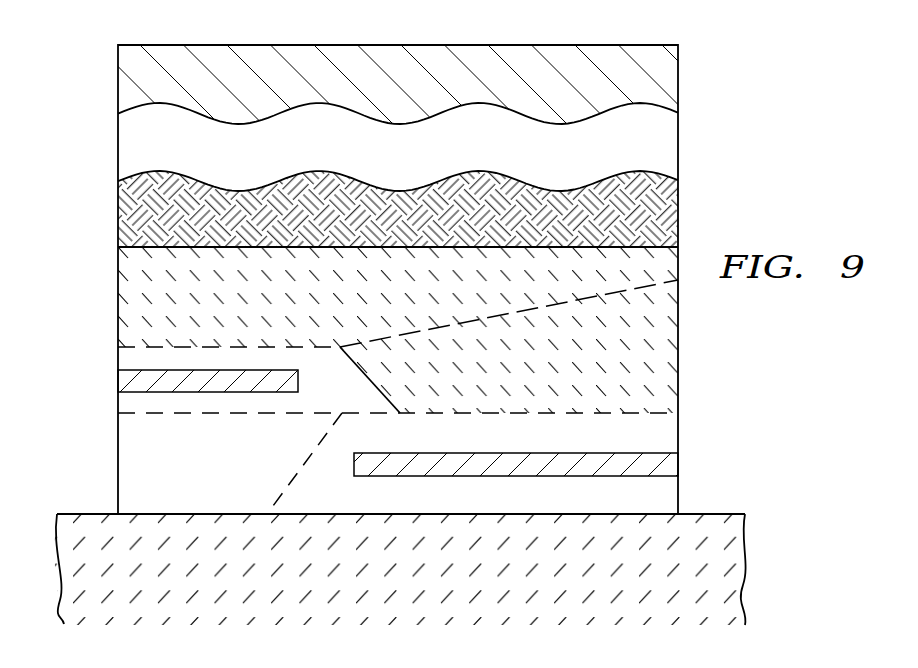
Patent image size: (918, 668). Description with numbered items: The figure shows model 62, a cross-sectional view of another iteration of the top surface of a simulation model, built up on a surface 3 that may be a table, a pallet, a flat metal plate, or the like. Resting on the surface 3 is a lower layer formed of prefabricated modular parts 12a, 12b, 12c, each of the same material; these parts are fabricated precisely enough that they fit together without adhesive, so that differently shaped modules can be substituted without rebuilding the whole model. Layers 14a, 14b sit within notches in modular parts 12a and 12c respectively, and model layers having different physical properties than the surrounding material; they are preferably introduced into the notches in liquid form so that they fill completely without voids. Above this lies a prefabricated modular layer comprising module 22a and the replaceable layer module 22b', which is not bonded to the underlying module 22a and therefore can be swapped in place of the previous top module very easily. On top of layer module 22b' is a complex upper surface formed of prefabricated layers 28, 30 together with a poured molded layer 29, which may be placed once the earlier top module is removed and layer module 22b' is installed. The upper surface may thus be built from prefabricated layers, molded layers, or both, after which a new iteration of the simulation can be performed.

The model 62 is at (722, 60).
The prefabricated layer 30 is at (333, 148).
The poured molded layer 29 is at (582, 121).
The prefabricated layer 28 is at (390, 190).
The layer module 22b' is at (398, 297).
The module 22a is at (450, 376).
The modular part 12c is at (357, 400).
The modular part 12b is at (218, 483).
The modular part 12a is at (342, 506).
The layer 14b is at (120, 377).
The layer 14a is at (668, 460).
The surface 3 is at (392, 581).